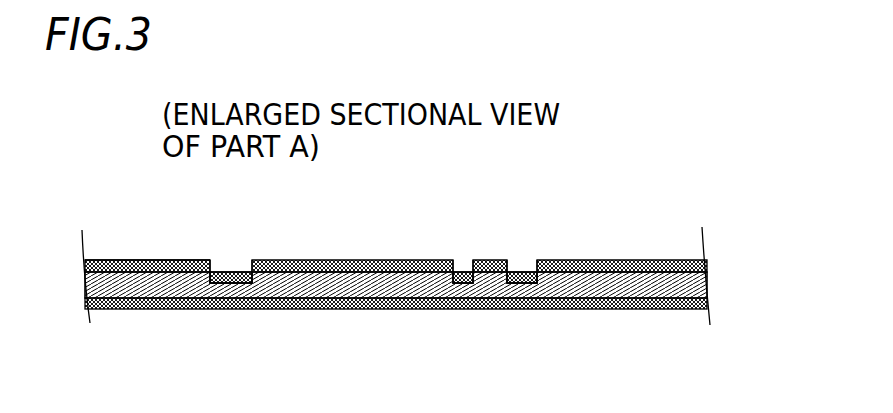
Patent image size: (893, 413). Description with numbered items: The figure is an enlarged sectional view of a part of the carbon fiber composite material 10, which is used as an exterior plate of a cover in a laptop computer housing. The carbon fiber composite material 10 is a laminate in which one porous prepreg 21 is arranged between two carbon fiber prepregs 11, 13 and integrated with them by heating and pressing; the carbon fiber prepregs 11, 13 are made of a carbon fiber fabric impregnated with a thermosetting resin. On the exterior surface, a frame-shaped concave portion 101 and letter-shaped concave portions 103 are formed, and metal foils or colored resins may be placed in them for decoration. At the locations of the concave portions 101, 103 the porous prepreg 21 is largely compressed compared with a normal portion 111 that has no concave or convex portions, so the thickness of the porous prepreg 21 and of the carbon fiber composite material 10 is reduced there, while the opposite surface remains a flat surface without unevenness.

The carbon fiber composite material 10 is at (607, 145).
The carbon fiber prepreg 11 is at (662, 305).
The carbon fiber prepreg 13 is at (657, 260).
The porous prepreg 21 is at (708, 282).
The frame-shaped concave portion 101 is at (228, 268).
The concave portion 103 is at (463, 268).
The normal portion 111 is at (122, 260).